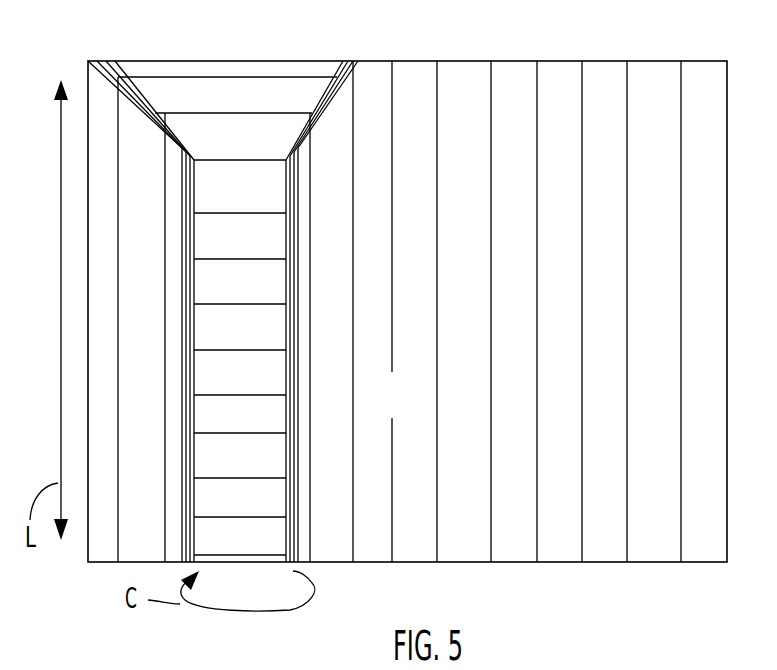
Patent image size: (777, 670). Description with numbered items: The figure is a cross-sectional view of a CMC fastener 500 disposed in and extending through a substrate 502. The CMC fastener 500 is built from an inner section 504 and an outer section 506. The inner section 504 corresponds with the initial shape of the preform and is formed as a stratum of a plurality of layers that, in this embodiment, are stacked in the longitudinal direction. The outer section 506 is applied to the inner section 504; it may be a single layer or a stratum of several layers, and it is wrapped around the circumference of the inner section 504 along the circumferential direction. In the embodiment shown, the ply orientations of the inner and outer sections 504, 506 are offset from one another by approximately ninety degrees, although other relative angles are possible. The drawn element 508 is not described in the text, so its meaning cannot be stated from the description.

The tire tread assembly 500 is at (303, 61).
The tread body with lateral ribs 502 is at (638, 107).
The funnel shaped inlet region 504 is at (212, 90).
The layered channel walls 506 is at (293, 529).
The channel with transverse elements 508 is at (267, 380).